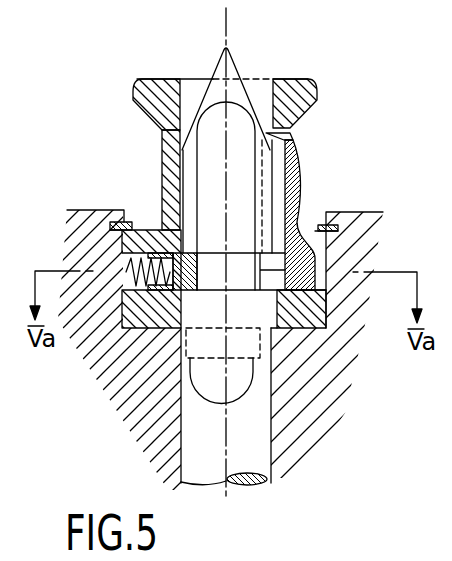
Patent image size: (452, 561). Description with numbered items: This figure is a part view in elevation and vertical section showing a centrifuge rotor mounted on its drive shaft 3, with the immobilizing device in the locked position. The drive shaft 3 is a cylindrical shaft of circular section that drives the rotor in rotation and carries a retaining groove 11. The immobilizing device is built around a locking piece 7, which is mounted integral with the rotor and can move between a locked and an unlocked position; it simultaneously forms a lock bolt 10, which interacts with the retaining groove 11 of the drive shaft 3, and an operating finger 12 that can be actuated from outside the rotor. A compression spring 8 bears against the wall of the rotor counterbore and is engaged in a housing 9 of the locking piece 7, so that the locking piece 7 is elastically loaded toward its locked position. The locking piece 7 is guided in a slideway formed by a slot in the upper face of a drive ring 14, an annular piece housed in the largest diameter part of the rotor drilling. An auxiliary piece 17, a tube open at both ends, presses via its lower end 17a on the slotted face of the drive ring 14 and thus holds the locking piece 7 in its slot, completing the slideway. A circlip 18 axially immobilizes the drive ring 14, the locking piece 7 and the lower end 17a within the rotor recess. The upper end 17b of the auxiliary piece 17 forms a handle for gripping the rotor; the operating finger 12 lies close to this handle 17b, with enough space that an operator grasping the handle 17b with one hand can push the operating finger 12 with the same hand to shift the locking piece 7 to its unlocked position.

The drive shaft 3 is at (252, 455).
The locking piece 7 is at (305, 202).
The compression spring 8 is at (122, 253).
The housing 9 is at (140, 223).
The lock bolt 10 is at (160, 297).
The retaining groove 11 is at (300, 270).
The operating finger 12 is at (303, 182).
The drive ring 14 is at (323, 313).
The auxiliary piece 17 is at (162, 168).
The lower end 17a is at (152, 227).
The upper end 17b is at (312, 93).
The circlip 18 is at (325, 220).